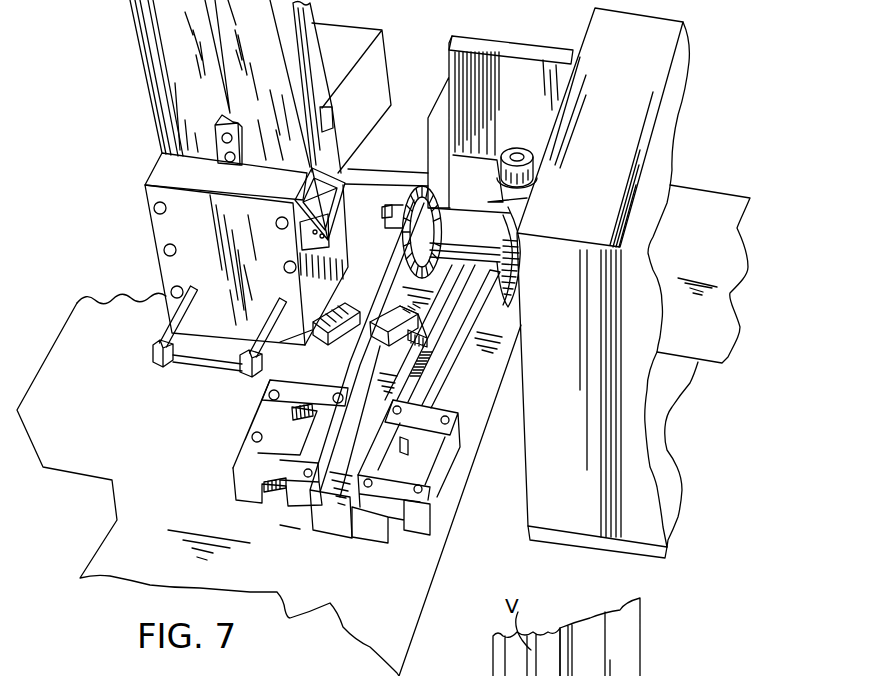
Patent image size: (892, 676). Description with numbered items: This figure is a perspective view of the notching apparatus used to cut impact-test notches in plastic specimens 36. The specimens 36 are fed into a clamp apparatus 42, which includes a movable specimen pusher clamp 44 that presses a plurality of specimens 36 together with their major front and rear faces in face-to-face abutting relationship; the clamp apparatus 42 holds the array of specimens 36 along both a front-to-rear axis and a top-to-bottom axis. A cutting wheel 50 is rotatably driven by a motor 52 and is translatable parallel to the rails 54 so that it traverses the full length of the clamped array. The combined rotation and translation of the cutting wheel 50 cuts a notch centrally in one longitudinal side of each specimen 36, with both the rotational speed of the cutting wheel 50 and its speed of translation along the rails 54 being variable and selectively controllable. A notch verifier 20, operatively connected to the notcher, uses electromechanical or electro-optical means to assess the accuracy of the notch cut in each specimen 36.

The notch verifier 20 is at (460, 160).
The specimens 36 is at (415, 312).
The clamp apparatus 42 is at (338, 326).
The specimen pusher clamp 44 is at (382, 340).
The cutting wheel 50 is at (435, 267).
The motor 52 is at (702, 203).
The rails 54 is at (408, 447).